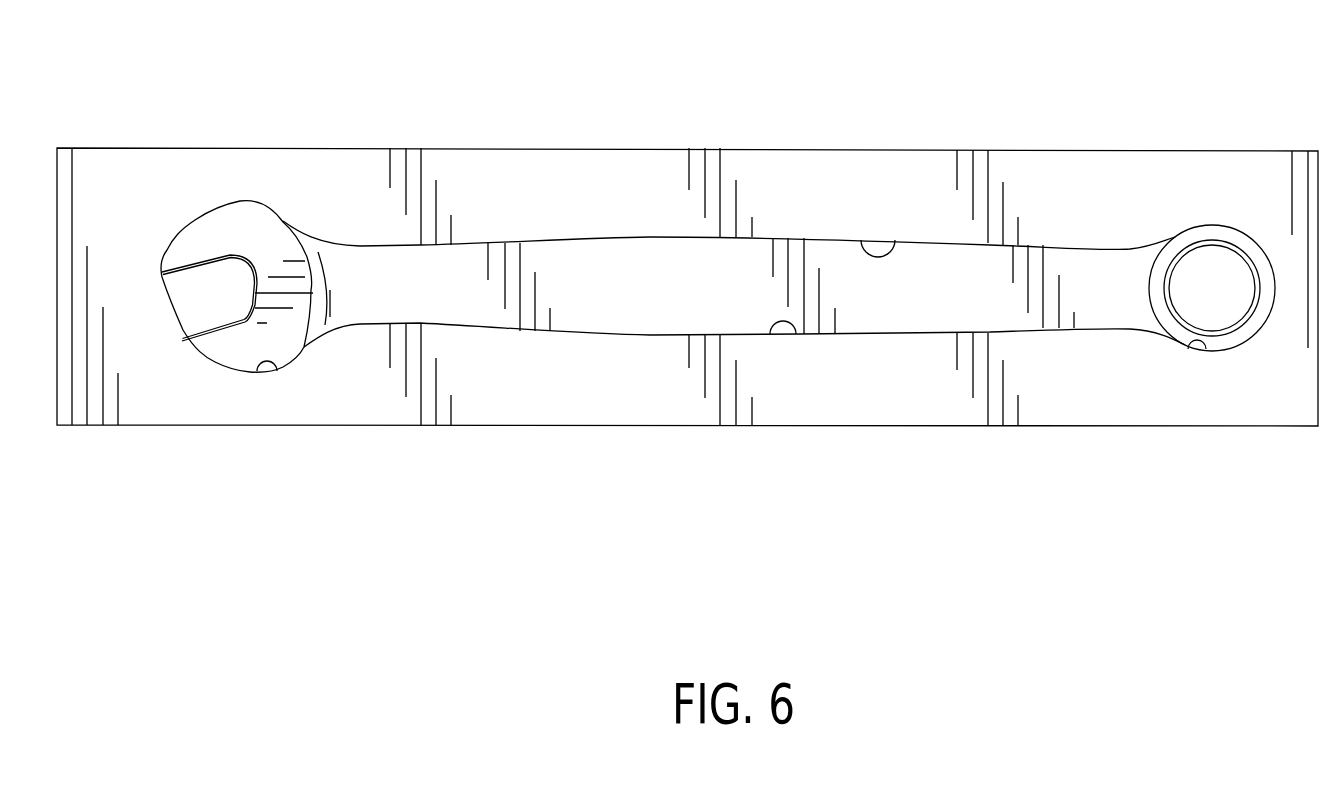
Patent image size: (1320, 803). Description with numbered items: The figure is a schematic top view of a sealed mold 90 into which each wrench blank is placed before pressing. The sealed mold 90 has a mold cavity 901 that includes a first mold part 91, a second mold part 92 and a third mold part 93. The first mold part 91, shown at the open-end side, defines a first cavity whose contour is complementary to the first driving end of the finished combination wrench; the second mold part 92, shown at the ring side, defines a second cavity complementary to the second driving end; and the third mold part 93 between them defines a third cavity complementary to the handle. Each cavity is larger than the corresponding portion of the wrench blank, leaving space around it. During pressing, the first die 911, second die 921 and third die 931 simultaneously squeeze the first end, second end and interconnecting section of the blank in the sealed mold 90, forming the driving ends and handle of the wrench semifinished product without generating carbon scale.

The sealed mold 90 is at (1030, 185).
The mold cavity 901 is at (896, 241).
The first mold part 91 is at (216, 376).
The first die 911 is at (202, 293).
The second mold part 92 is at (1233, 388).
The second die 921 is at (1217, 287).
The third mold part 93 is at (734, 386).
The third die 931 is at (717, 292).